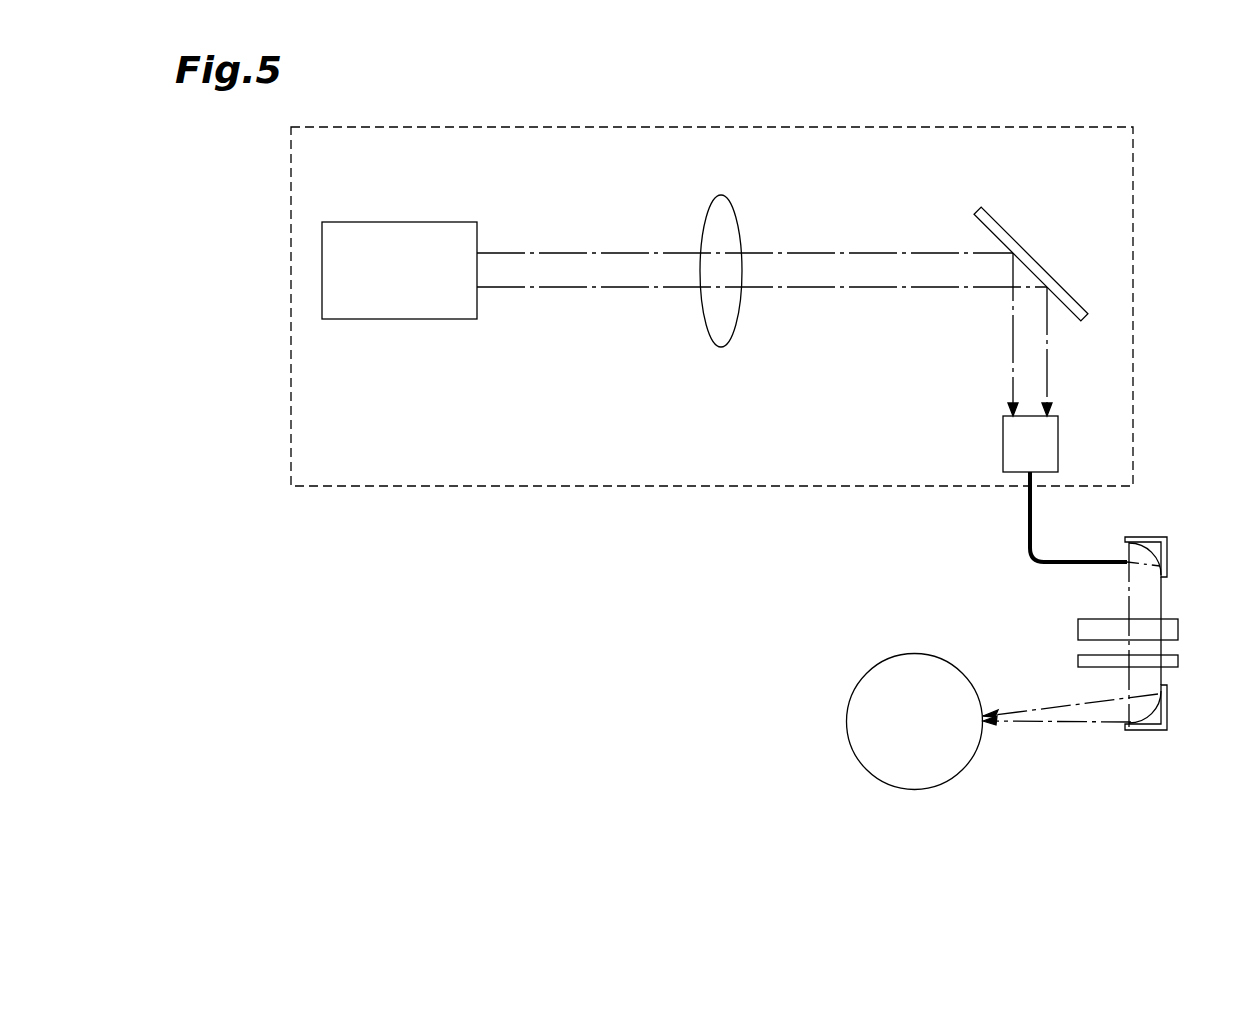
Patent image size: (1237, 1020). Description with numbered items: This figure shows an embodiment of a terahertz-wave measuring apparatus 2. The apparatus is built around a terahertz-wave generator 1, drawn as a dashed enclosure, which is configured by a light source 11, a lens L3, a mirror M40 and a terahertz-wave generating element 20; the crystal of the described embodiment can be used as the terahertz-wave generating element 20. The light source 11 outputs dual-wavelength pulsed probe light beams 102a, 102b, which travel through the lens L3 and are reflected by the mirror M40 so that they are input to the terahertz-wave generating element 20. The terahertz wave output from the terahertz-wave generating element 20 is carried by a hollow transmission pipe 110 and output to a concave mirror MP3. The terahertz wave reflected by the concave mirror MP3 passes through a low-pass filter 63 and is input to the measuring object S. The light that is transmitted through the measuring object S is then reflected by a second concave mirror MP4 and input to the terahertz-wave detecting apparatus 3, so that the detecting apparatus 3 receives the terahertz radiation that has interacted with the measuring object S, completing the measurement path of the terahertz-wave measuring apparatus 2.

The terahertz-wave generator 1 is at (375, 487).
The terahertz-wave measuring apparatus 2 is at (603, 599).
The terahertz-wave detecting apparatus 3 is at (967, 766).
The light source 11 is at (443, 222).
The terahertz-wave generating element 20 is at (1059, 431).
The low-pass filter 63 is at (1180, 623).
The probe light beam 102a is at (564, 252).
The probe light beam 102b is at (631, 288).
The hollow transmission pipe 110 is at (1027, 524).
The lens L3 is at (738, 203).
The mirror M40 is at (1020, 210).
The concave mirror MP3 is at (1154, 537).
The concave mirror MP4 is at (1158, 731).
The measuring object S is at (1180, 659).